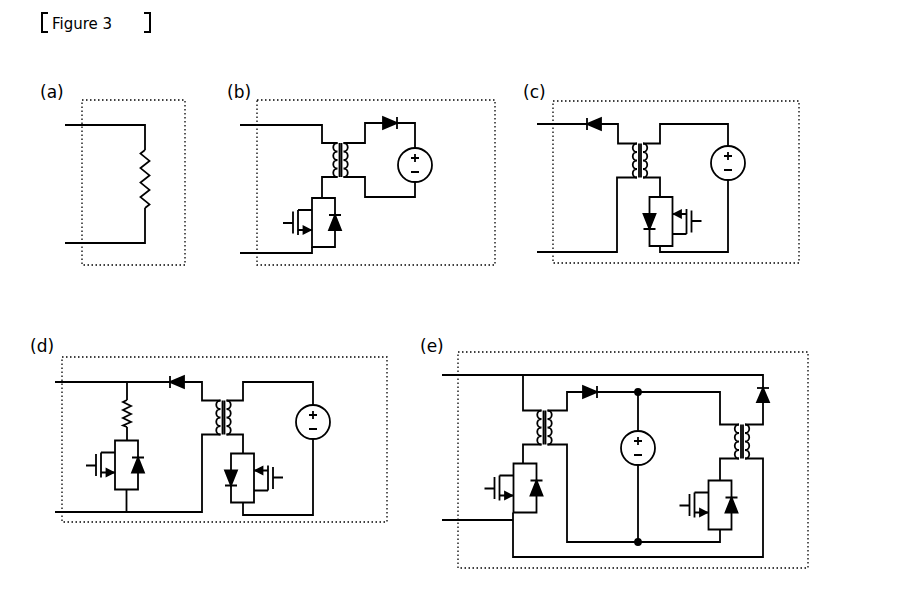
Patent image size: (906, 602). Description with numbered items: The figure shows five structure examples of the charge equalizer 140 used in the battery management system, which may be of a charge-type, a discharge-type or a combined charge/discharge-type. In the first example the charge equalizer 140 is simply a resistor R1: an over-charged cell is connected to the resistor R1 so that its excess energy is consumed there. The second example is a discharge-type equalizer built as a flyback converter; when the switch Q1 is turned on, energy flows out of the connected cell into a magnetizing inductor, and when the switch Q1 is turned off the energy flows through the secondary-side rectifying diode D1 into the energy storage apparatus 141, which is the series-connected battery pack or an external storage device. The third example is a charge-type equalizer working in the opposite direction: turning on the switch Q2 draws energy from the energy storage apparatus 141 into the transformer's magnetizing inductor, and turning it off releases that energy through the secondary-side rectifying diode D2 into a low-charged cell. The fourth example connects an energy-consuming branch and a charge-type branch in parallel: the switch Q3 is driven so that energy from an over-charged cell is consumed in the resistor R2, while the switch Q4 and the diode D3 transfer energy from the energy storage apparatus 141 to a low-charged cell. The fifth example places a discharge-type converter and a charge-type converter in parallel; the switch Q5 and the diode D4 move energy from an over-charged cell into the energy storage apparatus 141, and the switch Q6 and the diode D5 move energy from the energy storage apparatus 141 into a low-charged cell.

The charge equalizer 140 is at (148, 97).
The energy storage apparatus 141 is at (432, 165).
The resistor R1 is at (156, 179).
The resistor R2 is at (111, 413).
The switch Q1 is at (300, 222).
The switch Q2 is at (684, 221).
The switch Q3 is at (107, 468).
The switch Q4 is at (264, 479).
The switch Q5 is at (503, 488).
The switch Q6 is at (695, 505).
The secondary-side rectifying diode D1 is at (390, 134).
The secondary-side rectifying diode D2 is at (610, 135).
The secondary-side rectifying diode D3 is at (180, 395).
The secondary-side rectifying diode D4 is at (590, 403).
The secondary-side rectifying diode D5 is at (777, 397).